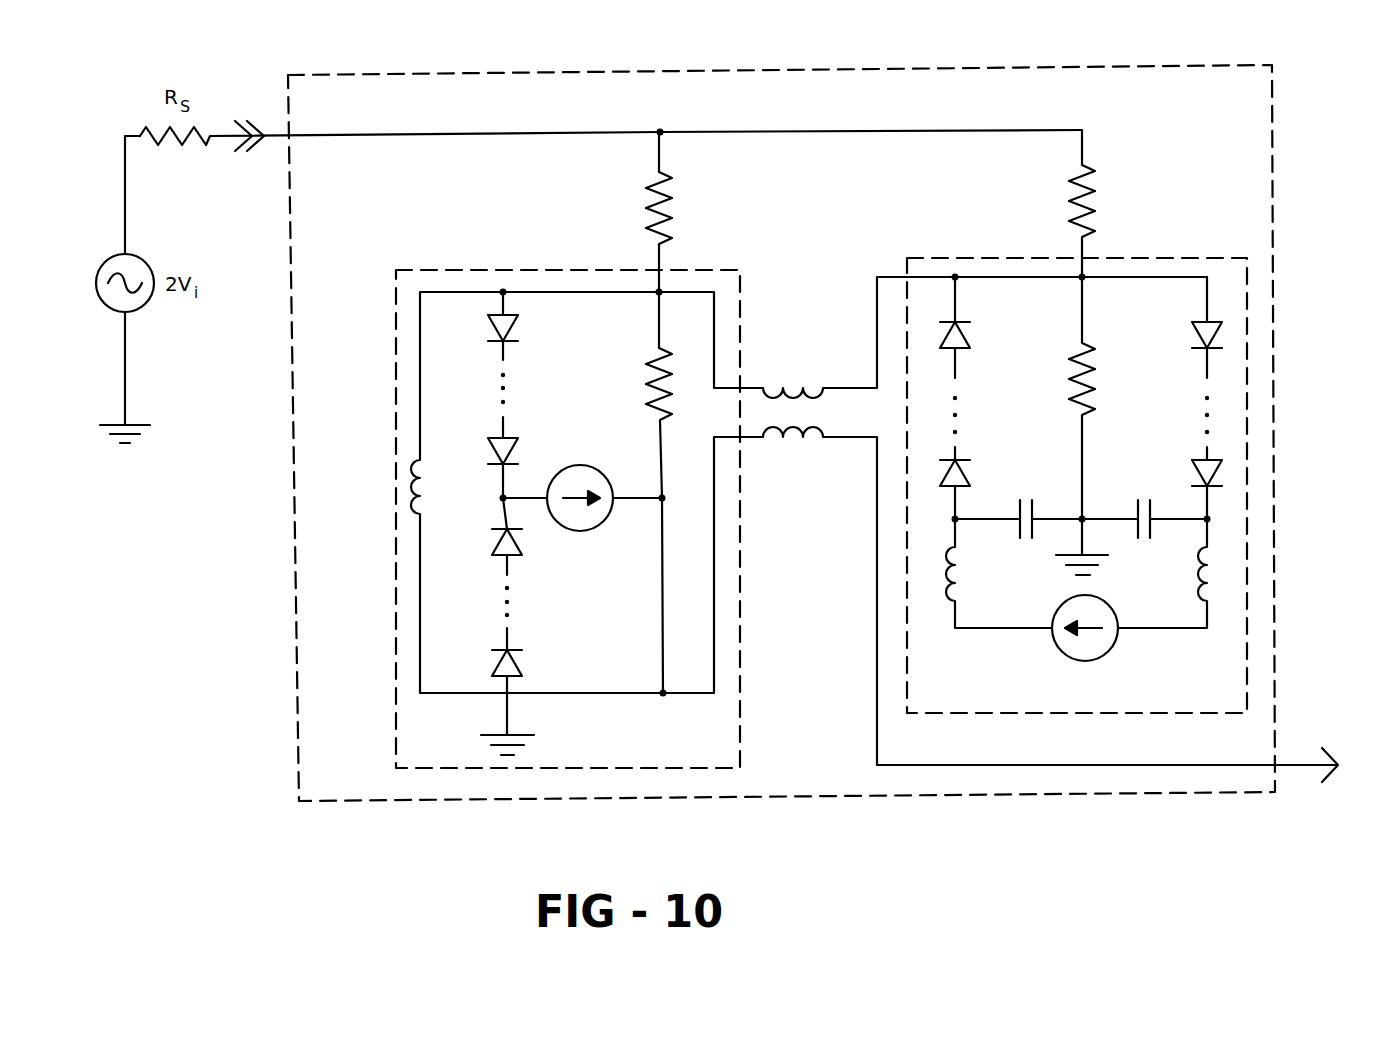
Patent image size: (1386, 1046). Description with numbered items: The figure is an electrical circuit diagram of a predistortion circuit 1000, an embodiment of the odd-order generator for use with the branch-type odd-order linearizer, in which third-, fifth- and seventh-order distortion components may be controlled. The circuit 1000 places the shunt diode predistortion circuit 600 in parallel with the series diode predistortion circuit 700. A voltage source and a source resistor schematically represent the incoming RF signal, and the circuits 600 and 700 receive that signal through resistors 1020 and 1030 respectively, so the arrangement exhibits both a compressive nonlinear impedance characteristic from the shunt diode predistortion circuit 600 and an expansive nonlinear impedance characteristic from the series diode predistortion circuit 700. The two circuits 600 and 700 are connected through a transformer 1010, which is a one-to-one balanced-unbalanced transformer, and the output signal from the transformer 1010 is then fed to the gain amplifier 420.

The odd-order generator embodiment 1000 is at (1070, 795).
The series diode predistortion circuit 700 is at (398, 660).
The shunt diode predistortion circuit 600 is at (992, 255).
The transformer 1010 is at (782, 440).
The resistor 1020 is at (1092, 215).
The resistor 1030 is at (646, 203).
The gain amplifier 420 is at (1131, 764).